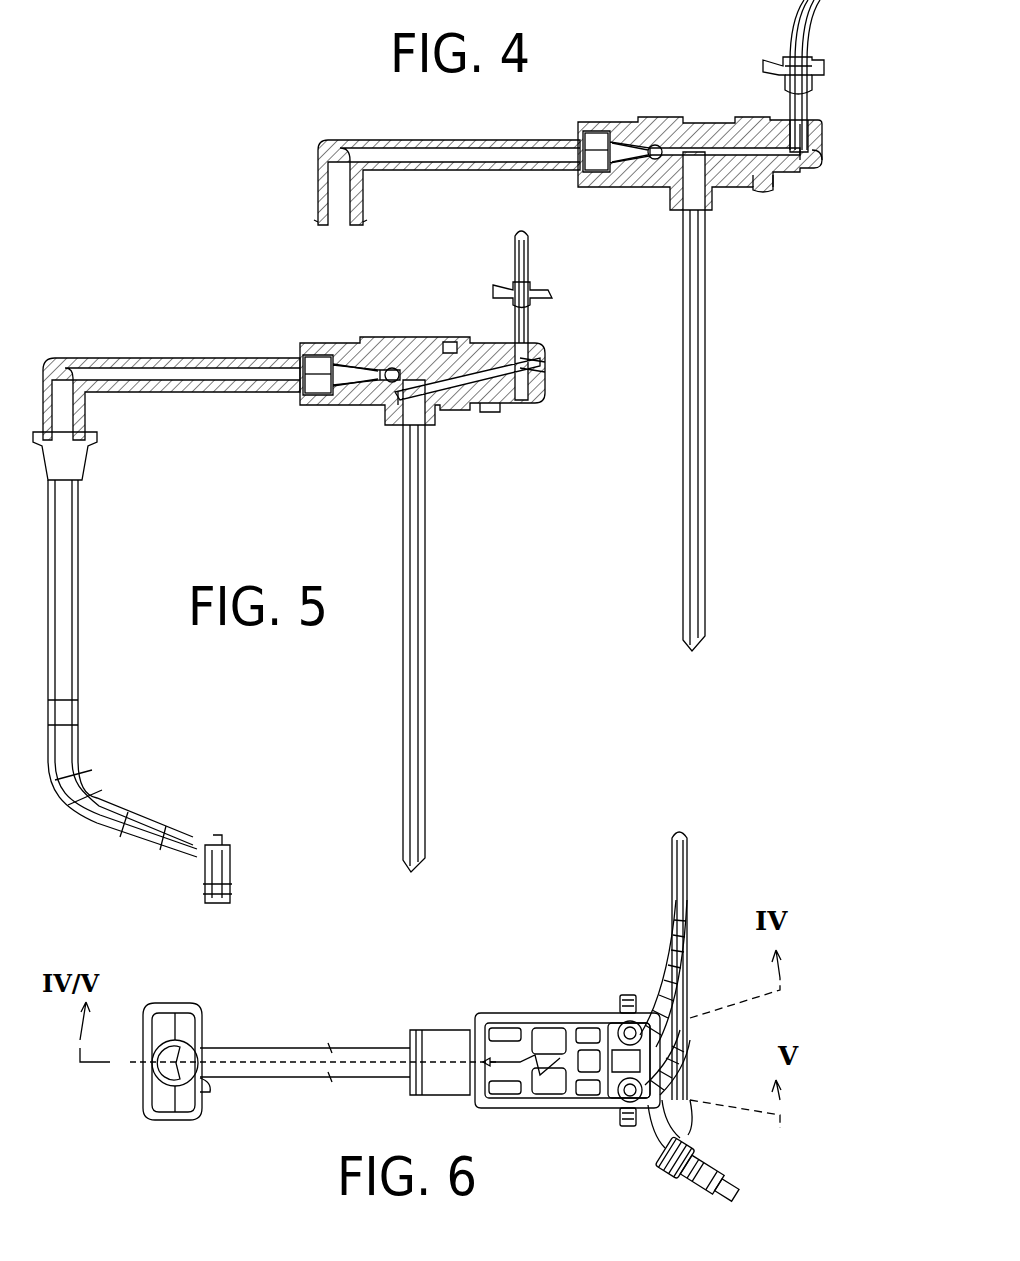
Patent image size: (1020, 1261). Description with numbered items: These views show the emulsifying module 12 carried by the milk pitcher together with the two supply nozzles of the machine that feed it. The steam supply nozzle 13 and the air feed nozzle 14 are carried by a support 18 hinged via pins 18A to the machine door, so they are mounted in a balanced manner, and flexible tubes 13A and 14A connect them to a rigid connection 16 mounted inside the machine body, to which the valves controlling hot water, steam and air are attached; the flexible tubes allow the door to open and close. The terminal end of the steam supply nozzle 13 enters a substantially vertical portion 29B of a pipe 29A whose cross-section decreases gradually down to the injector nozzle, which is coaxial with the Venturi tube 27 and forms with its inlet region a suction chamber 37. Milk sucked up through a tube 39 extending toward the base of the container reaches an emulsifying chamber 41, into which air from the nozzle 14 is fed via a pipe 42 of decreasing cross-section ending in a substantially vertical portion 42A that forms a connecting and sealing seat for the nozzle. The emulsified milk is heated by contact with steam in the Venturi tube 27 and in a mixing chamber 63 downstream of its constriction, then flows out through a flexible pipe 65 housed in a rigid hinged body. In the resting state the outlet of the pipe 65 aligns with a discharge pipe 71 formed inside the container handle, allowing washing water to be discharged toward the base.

In FIG. 4, the emulsifying module 12 is at (647, 100).
In FIG. 5, the emulsifying module 12 is at (390, 330).
In FIG. 6, the emulsifying module 12 is at (513, 1002).
In FIG. 4, the steam supply nozzle 13 is at (808, 105).
In FIG. 6, the steam supply nozzle 13 is at (667, 1062).
In FIG. 4, the flexible tube 13A is at (822, 5).
In FIG. 6, the flexible tube 13A is at (655, 1000).
In FIG. 5, the air feed nozzle 14 is at (530, 328).
In FIG. 5, the flexible tube 14A is at (512, 240).
In FIG. 6, the flexible tube 14A is at (688, 1062).
In FIG. 6, the rigid connection 16 is at (660, 1172).
In FIG. 4, the support 18 is at (770, 74).
In FIG. 5, the support 18 is at (540, 290).
In FIG. 6, the support 18 is at (616, 1012).
In FIG. 6, the pins 18A is at (624, 996).
In FIG. 4, the Venturi tube 27 is at (625, 160).
In FIG. 5, the Venturi tube 27 is at (318, 393).
In FIG. 4, the pipe 29A is at (750, 158).
In FIG. 4, the substantially vertical portion 29B is at (816, 132).
In FIG. 4, the suction chamber 37 is at (655, 162).
In FIG. 5, the suction chamber 37 is at (405, 350).
In FIG. 4, the tube 39 is at (683, 534).
In FIG. 5, the tube 39 is at (403, 754).
In FIG. 5, the emulsifying chamber 41 is at (395, 398).
In FIG. 5, the pipe 42 is at (462, 405).
In FIG. 5, the substantially vertical portion 42A is at (548, 372).
In FIG. 4, the mixing chamber 63 is at (595, 132).
In FIG. 5, the mixing chamber 63 is at (318, 354).
In FIG. 4, the flexible pipe 65 is at (362, 145).
In FIG. 5, the flexible pipe 65 is at (118, 356).
In FIG. 5, the discharge pipe 71 is at (75, 640).